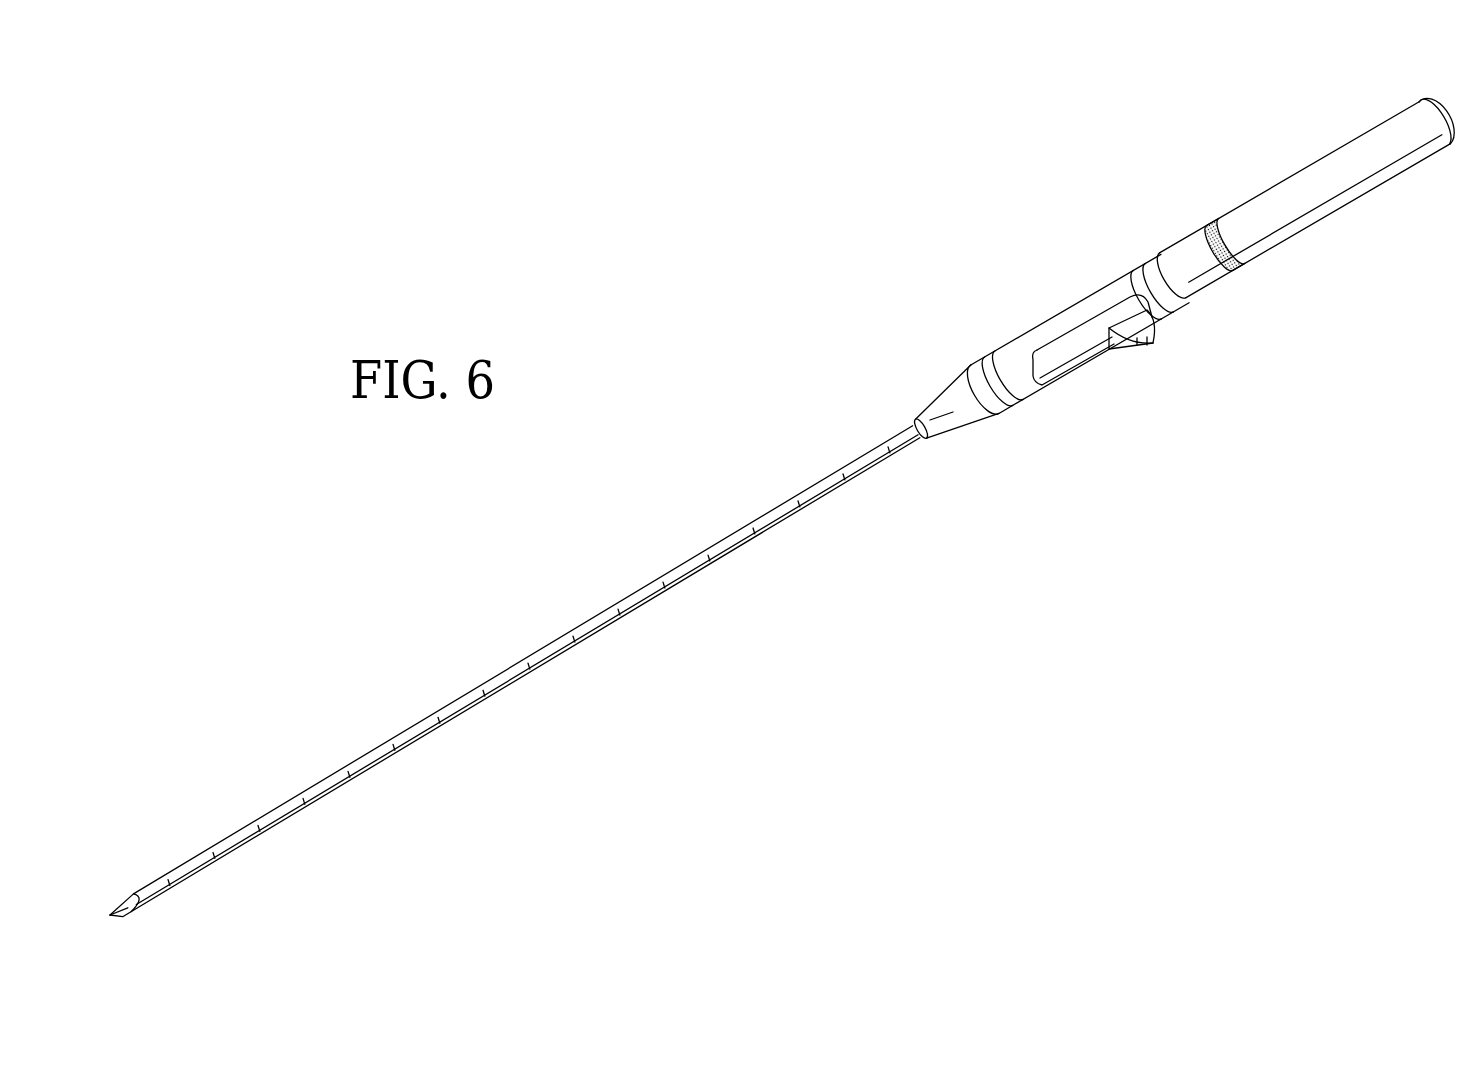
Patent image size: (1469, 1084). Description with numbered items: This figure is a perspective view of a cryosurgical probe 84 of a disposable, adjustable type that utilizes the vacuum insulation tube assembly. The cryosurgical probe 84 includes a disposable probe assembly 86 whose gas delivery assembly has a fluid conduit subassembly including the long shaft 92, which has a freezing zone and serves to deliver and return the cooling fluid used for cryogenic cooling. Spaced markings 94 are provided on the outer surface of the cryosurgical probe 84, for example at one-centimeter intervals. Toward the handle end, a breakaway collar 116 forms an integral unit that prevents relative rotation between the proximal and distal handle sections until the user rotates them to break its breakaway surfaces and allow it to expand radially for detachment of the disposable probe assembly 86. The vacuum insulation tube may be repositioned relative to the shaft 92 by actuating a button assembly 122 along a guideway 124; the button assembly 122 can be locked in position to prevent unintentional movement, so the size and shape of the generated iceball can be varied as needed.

The cryosurgical probe 84 is at (893, 620).
The disposable probe assembly 86 is at (1040, 323).
The shaft 92 is at (547, 640).
The spaced markings 94 is at (623, 613).
The breakaway collar 116 is at (1212, 222).
The button assembly 122 is at (1130, 350).
The guideway 124 is at (1057, 373).